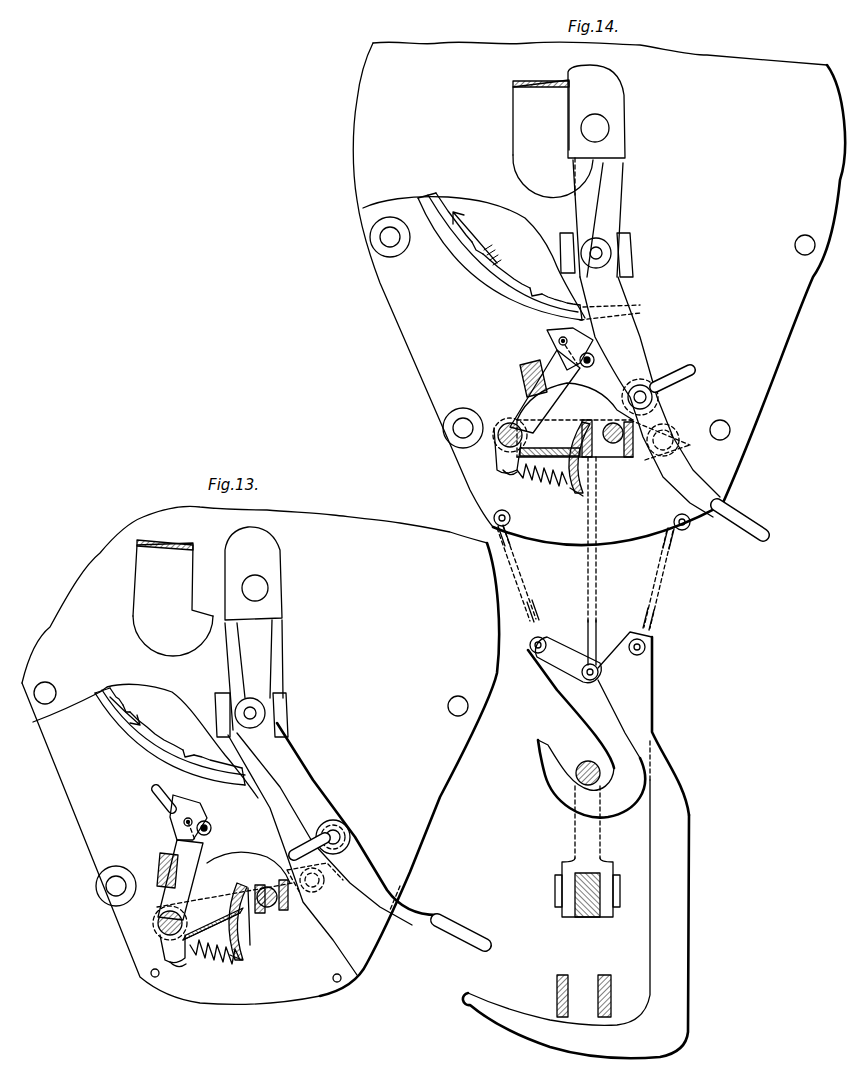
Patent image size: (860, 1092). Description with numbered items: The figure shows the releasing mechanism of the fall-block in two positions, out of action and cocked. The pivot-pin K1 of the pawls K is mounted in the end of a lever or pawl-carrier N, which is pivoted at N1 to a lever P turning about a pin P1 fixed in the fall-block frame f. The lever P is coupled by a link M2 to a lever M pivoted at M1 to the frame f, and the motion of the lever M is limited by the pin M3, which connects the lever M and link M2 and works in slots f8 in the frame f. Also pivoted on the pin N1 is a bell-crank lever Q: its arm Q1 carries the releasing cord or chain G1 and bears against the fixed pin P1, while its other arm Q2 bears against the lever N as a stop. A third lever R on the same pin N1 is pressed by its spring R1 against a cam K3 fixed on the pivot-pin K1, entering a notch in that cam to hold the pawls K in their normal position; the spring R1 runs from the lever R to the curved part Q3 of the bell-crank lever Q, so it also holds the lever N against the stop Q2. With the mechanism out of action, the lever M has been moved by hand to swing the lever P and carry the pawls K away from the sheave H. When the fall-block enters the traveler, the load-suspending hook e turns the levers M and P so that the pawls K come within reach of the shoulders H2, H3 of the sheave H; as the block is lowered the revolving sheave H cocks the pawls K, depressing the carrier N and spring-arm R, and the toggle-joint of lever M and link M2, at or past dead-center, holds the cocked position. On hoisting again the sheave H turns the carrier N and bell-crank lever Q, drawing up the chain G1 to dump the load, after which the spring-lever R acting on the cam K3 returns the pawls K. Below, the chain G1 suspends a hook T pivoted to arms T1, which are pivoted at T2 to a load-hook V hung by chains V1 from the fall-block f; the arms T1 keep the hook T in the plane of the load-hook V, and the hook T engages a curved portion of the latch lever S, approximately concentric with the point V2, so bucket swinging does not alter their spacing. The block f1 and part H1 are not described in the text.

In FIG. 14, the load-suspending hook e is at (553, 139).
In FIG. 13, the load-suspending hook e is at (173, 598).
In FIG. 14, the fall-block frame f is at (599, 293).
In FIG. 13, the fall-block frame f is at (260, 755).
In FIG. 14, the pivot block f1 is at (612, 112).
In FIG. 13, the pivot block f1 is at (271, 576).
In FIG. 14, the slots f8 is at (680, 372).
In FIG. 13, the slots f8 is at (302, 843).
In FIG. 14, the sheave H is at (500, 256).
In FIG. 13, the sheave H is at (170, 736).
In FIG. 14, the segment rib H1 is at (498, 290).
In FIG. 13, the segment rib H1 is at (199, 766).
In FIG. 14, the shoulder of the sheave H2 is at (455, 265).
In FIG. 13, the shoulder of the sheave H2 is at (109, 723).
In FIG. 14, the shoulder of the sheave H3 is at (517, 303).
In FIG. 13, the shoulder of the sheave H3 is at (168, 757).
In FIG. 14, the lever M is at (671, 406).
In FIG. 13, the lever M is at (356, 849).
In FIG. 14, the pivot of lever M M1 is at (612, 250).
In FIG. 13, the pivot of lever M M1 is at (266, 712).
In FIG. 14, the link M2 is at (667, 428).
In FIG. 13, the link M2 is at (325, 888).
In FIG. 14, the pin M3 is at (648, 384).
In FIG. 13, the pin M3 is at (347, 823).
In FIG. 14, the pawls K is at (548, 331).
In FIG. 13, the pawls K is at (160, 800).
In FIG. 14, the pivot-pin of the pawls K1 is at (558, 342).
In FIG. 13, the pivot-pin of the pawls K1 is at (184, 823).
In FIG. 14, the cam K3 is at (594, 341).
In FIG. 13, the cam K3 is at (200, 803).
In FIG. 14, the bell-crank lever Q is at (575, 420).
In FIG. 13, the bell-crank lever Q is at (225, 896).
In FIG. 14, the arm of the bell-crank lever Q1 is at (591, 421).
In FIG. 13, the arm of the bell-crank lever Q1 is at (252, 888).
In FIG. 14, the arm of the bell-crank lever Q2 is at (521, 379).
In FIG. 13, the arm of the bell-crank lever Q2 is at (160, 864).
In FIG. 14, the curved part of the bell-crank lever Q3 is at (574, 496).
In FIG. 13, the curved part of the bell-crank lever Q3 is at (242, 957).
In FIG. 14, the lever or pawl-carrier N is at (508, 416).
In FIG. 13, the lever or pawl-carrier N is at (160, 912).
In FIG. 14, the pivot pin N1 is at (503, 441).
In FIG. 13, the pivot pin N1 is at (158, 926).
In FIG. 14, the spring-lever R is at (545, 391).
In FIG. 13, the spring-lever R is at (180, 880).
In FIG. 14, the spring R1 is at (527, 490).
In FIG. 13, the spring R1 is at (200, 963).
In FIG. 14, the lever P is at (619, 446).
In FIG. 13, the lever P is at (270, 908).
In FIG. 14, the pin P1 is at (628, 450).
In FIG. 13, the pin P1 is at (286, 908).
In FIG. 14, the releasing cord or chain G1 is at (597, 505).
In FIG. 13, the releasing cord or chain G1 is at (250, 938).
In FIG. 14, the load-hook V is at (608, 725).
In FIG. 14, the chains V1 is at (668, 565).
In FIG. 14, the point V2 is at (580, 783).
In FIG. 14, the hook T is at (573, 1060).
In FIG. 14, the arms T1 is at (563, 652).
In FIG. 14, the pivot T2 is at (532, 657).
In FIG. 14, the lever S is at (621, 992).